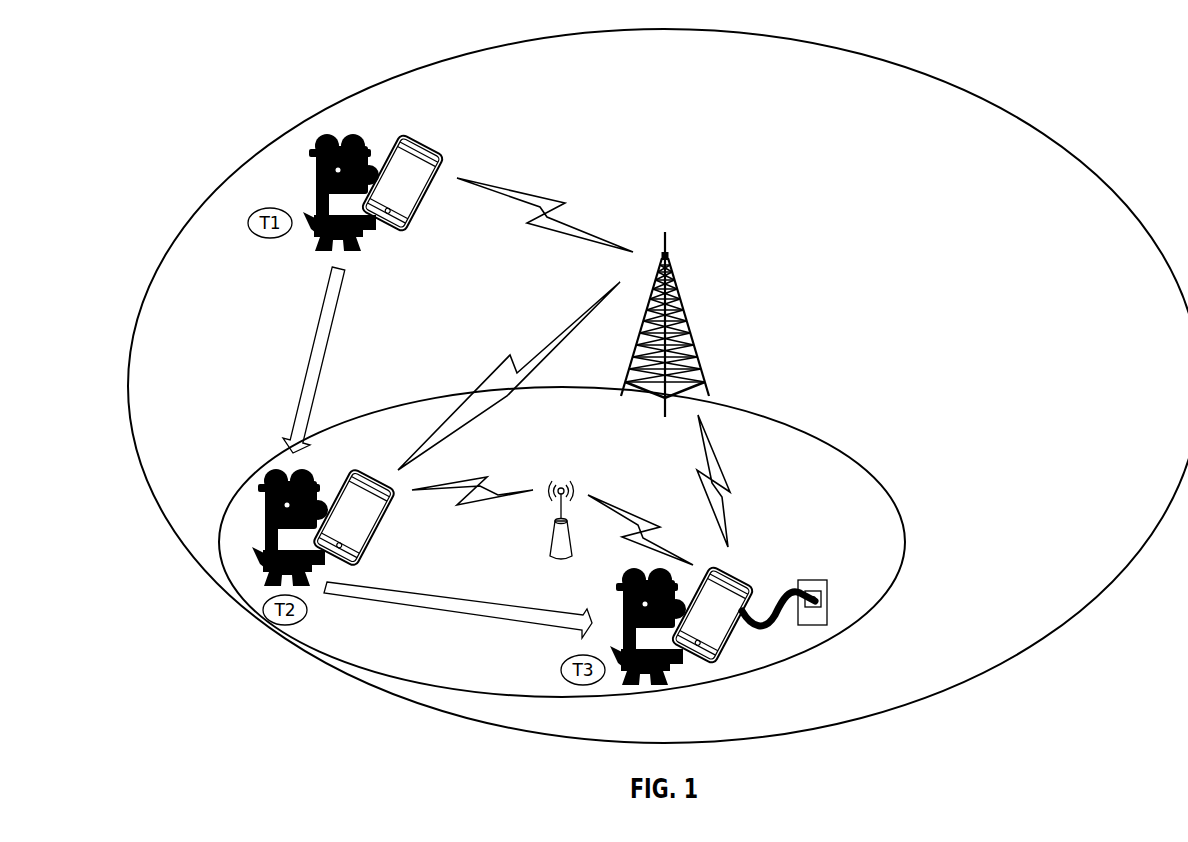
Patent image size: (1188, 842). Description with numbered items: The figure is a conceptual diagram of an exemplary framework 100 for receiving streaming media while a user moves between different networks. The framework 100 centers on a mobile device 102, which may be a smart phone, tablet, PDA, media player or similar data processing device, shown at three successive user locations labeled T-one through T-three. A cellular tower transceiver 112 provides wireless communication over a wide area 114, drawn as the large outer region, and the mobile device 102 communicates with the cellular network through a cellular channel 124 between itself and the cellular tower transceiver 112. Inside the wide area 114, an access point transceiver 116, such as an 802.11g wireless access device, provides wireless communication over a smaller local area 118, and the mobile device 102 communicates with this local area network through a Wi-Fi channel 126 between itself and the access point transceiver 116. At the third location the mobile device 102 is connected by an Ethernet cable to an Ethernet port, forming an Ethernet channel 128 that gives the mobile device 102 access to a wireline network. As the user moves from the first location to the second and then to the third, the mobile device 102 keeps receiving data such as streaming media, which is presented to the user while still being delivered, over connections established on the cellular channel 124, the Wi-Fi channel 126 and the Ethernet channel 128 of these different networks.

The framework 100 is at (230, 110).
The mobile device 102 is at (384, 193).
The cellular tower transceiver 112 is at (690, 342).
The wide area 114 is at (1085, 163).
The access point transceiver 116 is at (548, 548).
The local area 118 is at (840, 451).
The cellular channel 124 is at (553, 203).
The Wi-Fi channel 126 is at (480, 480).
The Ethernet channel 128 is at (786, 591).